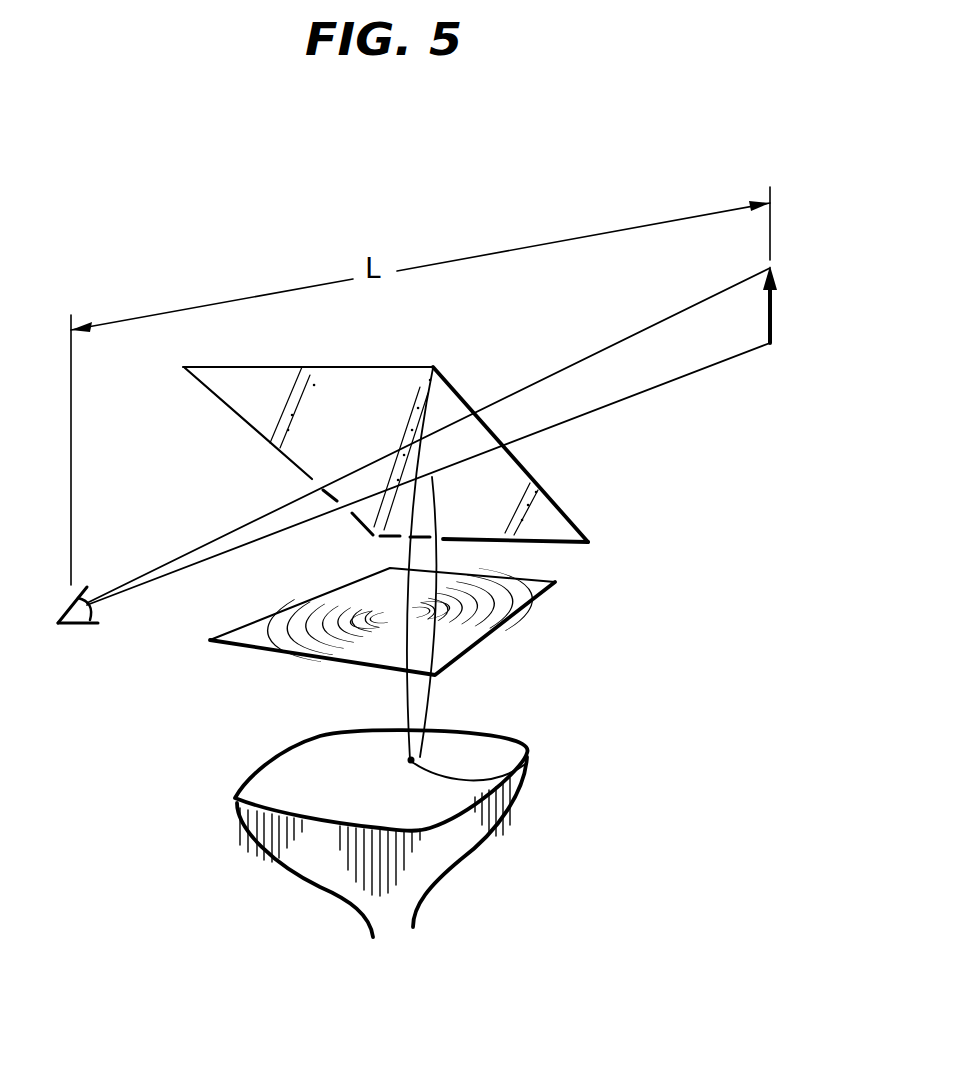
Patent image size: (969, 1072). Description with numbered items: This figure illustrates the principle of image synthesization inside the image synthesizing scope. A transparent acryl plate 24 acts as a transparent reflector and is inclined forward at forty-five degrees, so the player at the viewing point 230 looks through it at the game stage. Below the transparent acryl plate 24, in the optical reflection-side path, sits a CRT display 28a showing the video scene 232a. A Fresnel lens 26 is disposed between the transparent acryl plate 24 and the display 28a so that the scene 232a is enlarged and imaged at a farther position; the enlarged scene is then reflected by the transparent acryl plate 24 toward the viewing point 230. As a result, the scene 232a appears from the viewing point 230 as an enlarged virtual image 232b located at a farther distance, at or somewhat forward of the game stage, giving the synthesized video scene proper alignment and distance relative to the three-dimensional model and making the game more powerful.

The transparent acryl plate 24 is at (522, 467).
The Fresnel lens 26 is at (472, 650).
The CRT display 28a is at (517, 802).
The viewing point 230 is at (75, 626).
The scene on the display 232a is at (528, 763).
The virtual image 232b is at (773, 317).